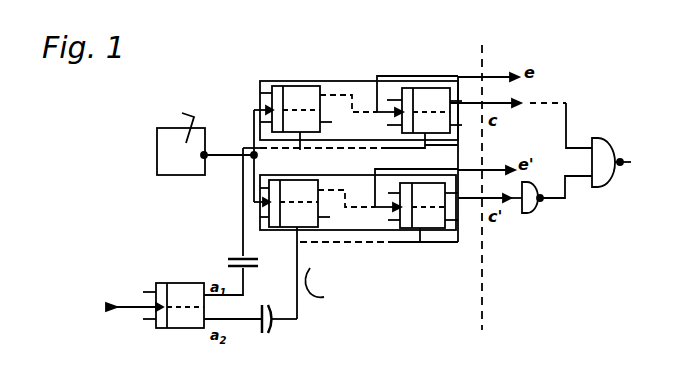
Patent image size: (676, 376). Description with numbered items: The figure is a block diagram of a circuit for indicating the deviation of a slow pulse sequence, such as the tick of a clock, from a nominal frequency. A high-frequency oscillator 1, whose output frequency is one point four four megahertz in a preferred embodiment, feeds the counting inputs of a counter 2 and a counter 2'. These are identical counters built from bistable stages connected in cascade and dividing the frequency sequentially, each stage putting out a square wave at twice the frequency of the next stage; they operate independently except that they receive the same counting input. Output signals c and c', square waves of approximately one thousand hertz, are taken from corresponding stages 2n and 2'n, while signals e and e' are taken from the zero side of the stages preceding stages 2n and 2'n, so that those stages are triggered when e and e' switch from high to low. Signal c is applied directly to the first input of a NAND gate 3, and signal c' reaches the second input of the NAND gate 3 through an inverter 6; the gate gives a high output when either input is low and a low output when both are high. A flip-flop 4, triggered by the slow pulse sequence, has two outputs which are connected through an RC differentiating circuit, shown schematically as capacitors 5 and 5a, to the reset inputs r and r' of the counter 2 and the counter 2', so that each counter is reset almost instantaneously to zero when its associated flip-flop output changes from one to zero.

The high-frequency oscillator 1 is at (157, 155).
The counter 2 is at (334, 105).
The stage of counter 2 2n is at (396, 86).
The counter 2' is at (356, 247).
The stage of counter 2' 2'n is at (415, 223).
The NAND gate 3 is at (604, 138).
The flip-flop 4 is at (185, 283).
The capacitor 5 is at (236, 258).
The capacitor 5a is at (277, 320).
The inverter 6 is at (536, 212).